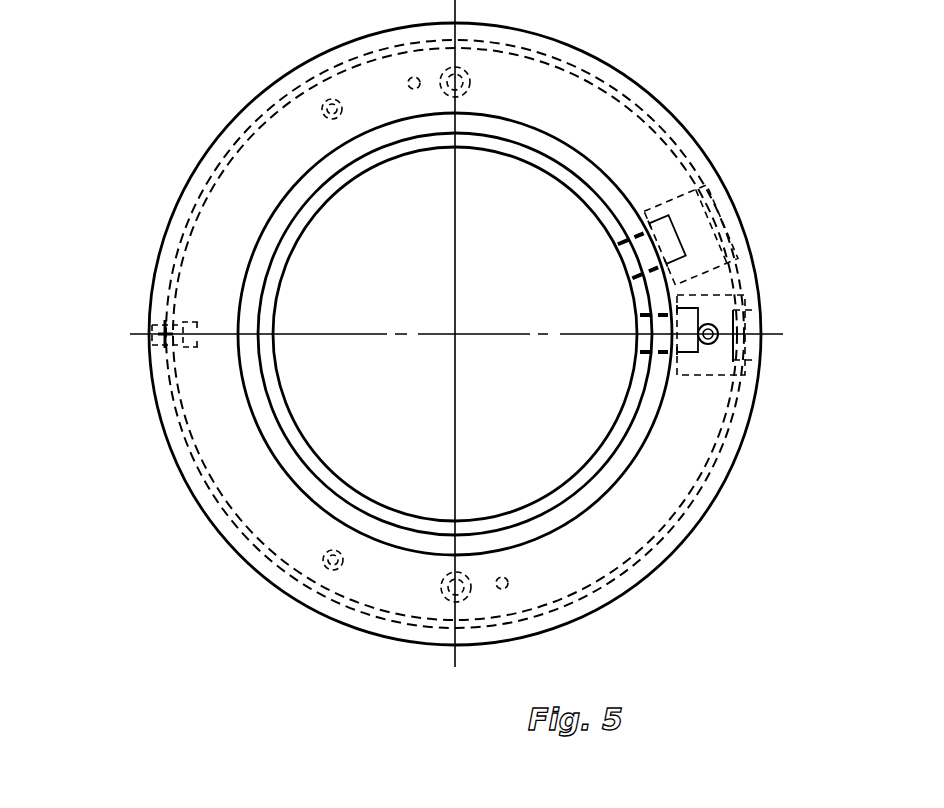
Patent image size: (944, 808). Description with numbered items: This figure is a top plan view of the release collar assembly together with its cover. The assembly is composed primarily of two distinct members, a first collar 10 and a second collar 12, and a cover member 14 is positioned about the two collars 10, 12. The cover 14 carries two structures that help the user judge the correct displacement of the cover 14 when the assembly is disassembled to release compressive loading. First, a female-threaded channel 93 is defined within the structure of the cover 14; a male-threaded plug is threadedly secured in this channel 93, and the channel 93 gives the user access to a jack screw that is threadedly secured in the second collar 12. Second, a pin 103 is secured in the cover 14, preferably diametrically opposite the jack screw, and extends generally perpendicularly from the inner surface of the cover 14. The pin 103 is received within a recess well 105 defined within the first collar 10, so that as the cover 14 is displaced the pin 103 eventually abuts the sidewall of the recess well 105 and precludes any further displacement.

The cover member 14 is at (197, 168).
The second collar 12 is at (584, 574).
The first collar 10 is at (541, 500).
The female-threaded channel 93 is at (757, 322).
The pin 103 is at (157, 329).
The recess well 105 is at (198, 330).